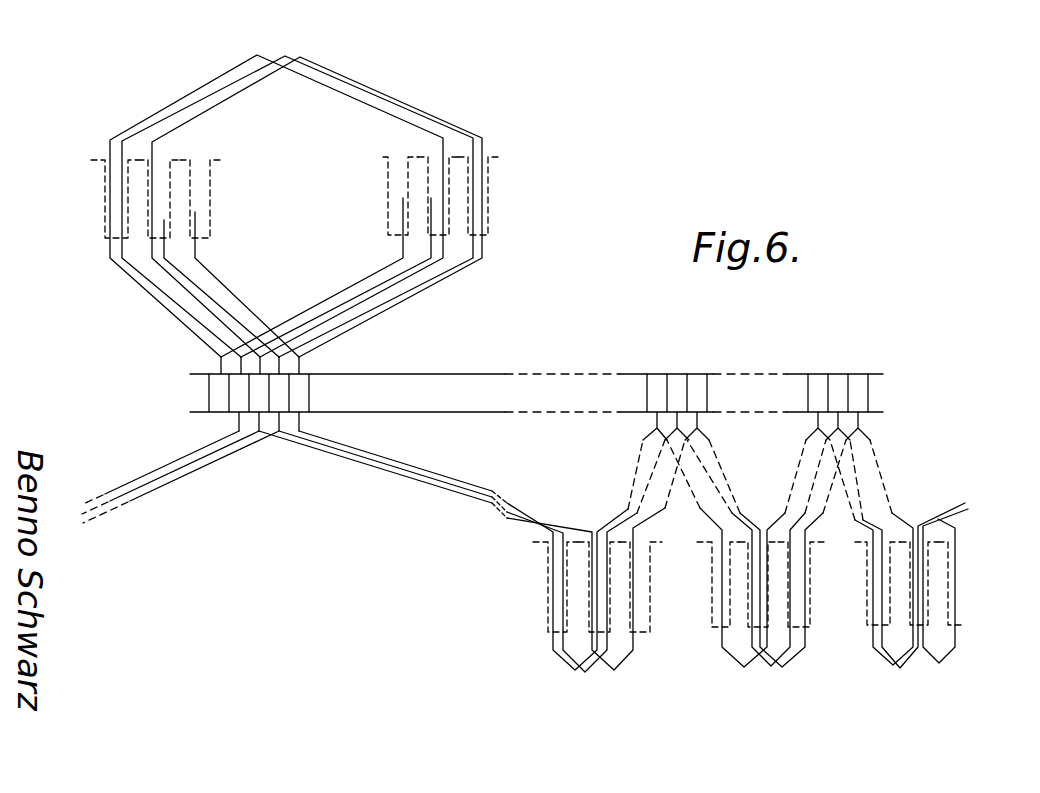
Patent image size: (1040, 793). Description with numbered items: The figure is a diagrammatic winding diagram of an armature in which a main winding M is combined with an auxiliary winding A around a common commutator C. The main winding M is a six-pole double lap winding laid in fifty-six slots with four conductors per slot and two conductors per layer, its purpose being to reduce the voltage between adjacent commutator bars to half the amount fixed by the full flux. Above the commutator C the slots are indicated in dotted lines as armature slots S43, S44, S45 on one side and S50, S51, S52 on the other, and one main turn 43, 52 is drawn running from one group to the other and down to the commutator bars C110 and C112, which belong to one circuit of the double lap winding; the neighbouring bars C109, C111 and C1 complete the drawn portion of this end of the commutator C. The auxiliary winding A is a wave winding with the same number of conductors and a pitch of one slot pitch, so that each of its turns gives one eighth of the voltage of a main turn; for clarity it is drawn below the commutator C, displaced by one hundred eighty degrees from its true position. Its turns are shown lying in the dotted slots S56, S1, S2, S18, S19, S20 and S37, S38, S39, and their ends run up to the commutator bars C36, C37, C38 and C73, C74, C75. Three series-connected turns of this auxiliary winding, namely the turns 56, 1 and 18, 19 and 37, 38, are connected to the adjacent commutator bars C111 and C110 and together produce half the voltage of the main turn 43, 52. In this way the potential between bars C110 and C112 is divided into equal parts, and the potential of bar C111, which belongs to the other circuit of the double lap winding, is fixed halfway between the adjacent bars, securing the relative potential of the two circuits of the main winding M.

The main winding M is at (276, 206).
The main turn 43 is at (122, 246).
The main turn 52 is at (474, 243).
The armature slot S43 is at (110, 191).
The armature slot S44 is at (163, 167).
The armature slot S45 is at (204, 168).
The armature slot S50 is at (390, 191).
The armature slot S51 is at (435, 158).
The armature slot S52 is at (487, 158).
The commutator C is at (536, 393).
The commutator bar C109 is at (217, 380).
The commutator bar C110 is at (237, 388).
The commutator bar C111 is at (257, 398).
The commutator bar C112 is at (278, 390).
The commutator bar C1 is at (303, 400).
The commutator bar C36 is at (657, 375).
The commutator bar C37 is at (678, 375).
The commutator bar C38 is at (700, 378).
The commutator bar C73 is at (822, 375).
The commutator bar C74 is at (840, 375).
The commutator bar C75 is at (862, 375).
The auxiliary winding A is at (586, 556).
The auxiliary winding turn 56 is at (557, 613).
The auxiliary winding turn 1 is at (593, 642).
The armature slot S56 is at (552, 567).
The armature slot S1 is at (590, 540).
The armature slot S2 is at (643, 550).
The auxiliary winding turn 18 is at (723, 605).
The auxiliary winding turn 19 is at (760, 637).
The armature slot S18 is at (715, 557).
The armature slot S19 is at (770, 537).
The armature slot S20 is at (808, 542).
The auxiliary winding turn 37 is at (873, 633).
The auxiliary winding turn 38 is at (912, 637).
The armature slot S37 is at (868, 568).
The armature slot S38 is at (928, 542).
The armature slot S39 is at (965, 562).